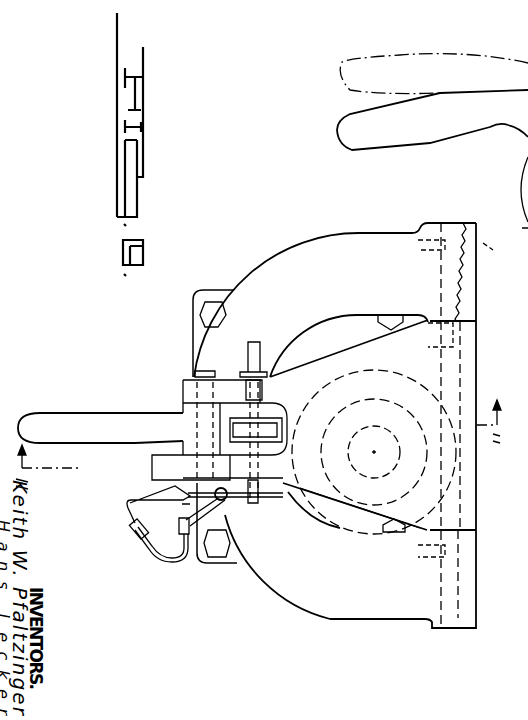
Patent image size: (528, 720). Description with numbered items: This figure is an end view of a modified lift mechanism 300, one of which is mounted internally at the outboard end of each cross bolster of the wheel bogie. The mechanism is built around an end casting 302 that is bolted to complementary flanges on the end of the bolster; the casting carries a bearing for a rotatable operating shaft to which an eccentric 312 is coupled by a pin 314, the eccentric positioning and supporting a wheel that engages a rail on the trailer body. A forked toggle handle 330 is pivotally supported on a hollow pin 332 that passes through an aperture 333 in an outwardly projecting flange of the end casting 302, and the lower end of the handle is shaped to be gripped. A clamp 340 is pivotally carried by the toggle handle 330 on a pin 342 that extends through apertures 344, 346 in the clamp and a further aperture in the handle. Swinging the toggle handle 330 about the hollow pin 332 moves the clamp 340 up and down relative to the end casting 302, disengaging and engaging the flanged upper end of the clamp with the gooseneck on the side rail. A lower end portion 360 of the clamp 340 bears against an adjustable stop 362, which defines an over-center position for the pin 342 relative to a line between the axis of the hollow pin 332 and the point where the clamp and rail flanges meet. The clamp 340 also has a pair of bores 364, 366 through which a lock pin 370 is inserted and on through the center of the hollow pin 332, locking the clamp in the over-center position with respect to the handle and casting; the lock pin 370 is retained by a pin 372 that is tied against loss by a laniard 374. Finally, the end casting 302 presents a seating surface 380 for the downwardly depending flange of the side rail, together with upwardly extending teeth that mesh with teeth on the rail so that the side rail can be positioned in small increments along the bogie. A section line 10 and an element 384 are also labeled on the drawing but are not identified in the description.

The section line 10- 10 is at (254, 421).
The lift mechanism 300 is at (403, 425).
The end casting 302 is at (312, 615).
The eccentric 312 is at (425, 452).
The pin 314 is at (358, 527).
The forked toggle handle 330 is at (495, 127).
The hollow pin 332 is at (366, 145).
The aperture 333 is at (364, 452).
The clamp 340 is at (349, 347).
The pin 342 is at (199, 369).
The aperture 344 is at (378, 430).
The aperture 346 is at (226, 507).
The lower end portion 360 is at (150, 468).
The adjustable stop 362 is at (219, 440).
The bore 364 is at (230, 376).
The bore 366 is at (255, 505).
The lock pin 370 is at (254, 343).
The pin 372 is at (283, 498).
The laniard 374 is at (162, 555).
The seating surface 380 is at (425, 242).
The pivot 384 is at (484, 250).